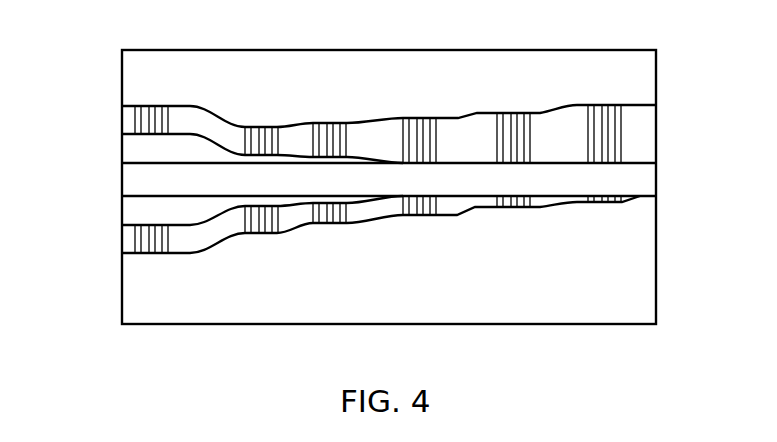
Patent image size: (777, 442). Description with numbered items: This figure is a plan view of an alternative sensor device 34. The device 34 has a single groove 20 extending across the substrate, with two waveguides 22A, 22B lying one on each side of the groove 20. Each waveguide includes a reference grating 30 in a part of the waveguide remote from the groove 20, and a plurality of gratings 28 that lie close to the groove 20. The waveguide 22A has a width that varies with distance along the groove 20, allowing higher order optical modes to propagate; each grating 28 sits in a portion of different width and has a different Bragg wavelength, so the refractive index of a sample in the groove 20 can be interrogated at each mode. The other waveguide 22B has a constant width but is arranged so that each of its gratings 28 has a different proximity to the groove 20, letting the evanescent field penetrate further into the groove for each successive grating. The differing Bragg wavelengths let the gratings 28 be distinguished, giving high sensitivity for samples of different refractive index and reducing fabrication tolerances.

The groove 20 is at (643, 182).
The waveguide 22A is at (132, 122).
The waveguide 22B is at (132, 243).
The gratings 28 is at (605, 108).
The reference grating 30 is at (145, 120).
The device 34 is at (667, 58).